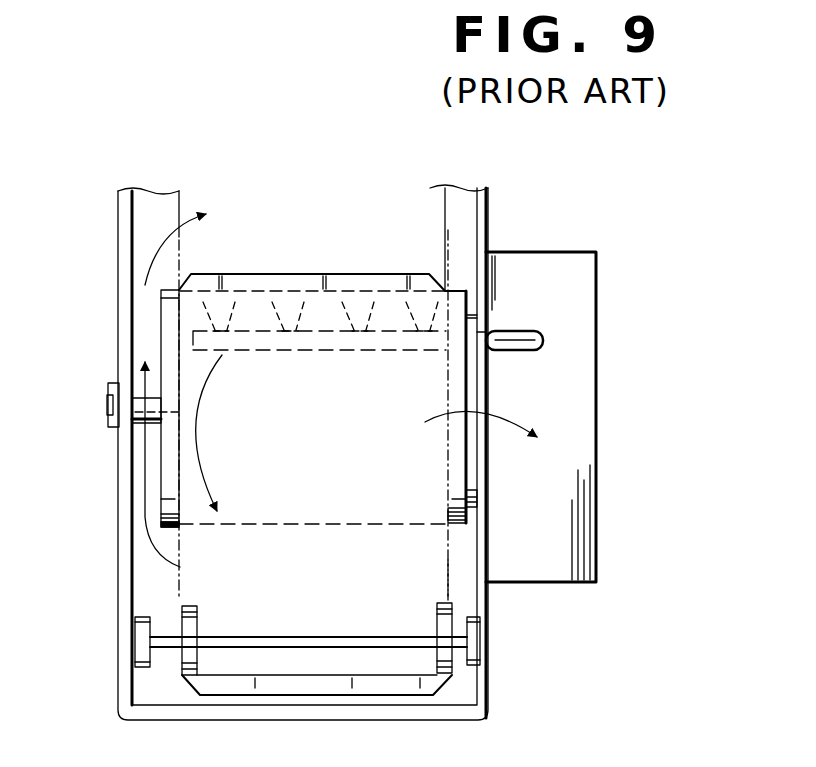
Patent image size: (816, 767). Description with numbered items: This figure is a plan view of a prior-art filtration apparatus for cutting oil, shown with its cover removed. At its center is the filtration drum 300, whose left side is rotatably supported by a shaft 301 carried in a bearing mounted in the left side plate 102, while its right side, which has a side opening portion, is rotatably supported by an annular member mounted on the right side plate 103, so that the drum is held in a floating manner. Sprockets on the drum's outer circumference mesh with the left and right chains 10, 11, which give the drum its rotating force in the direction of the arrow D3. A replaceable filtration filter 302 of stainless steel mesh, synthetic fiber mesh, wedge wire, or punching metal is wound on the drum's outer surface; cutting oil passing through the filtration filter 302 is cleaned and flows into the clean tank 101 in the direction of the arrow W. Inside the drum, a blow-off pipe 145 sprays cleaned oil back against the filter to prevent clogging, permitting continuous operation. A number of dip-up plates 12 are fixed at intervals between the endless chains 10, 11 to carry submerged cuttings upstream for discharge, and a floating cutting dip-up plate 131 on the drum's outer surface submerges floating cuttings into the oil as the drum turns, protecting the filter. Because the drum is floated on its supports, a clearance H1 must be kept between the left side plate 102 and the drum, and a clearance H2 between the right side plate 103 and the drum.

The left chain 10 is at (180, 581).
The right chain 11 is at (452, 567).
The dip-up plate 12 is at (327, 683).
The clean tank 101 is at (577, 307).
The left side plate 102 is at (142, 245).
The right side plate 103 is at (488, 205).
The floating cutting dip-up plate 131 is at (310, 272).
The blow-off pipe 145 is at (335, 340).
The filtration drum 300 is at (470, 480).
The shaft 301 is at (133, 412).
The filtration filter 302 is at (367, 530).
The clearance H1 is at (143, 325).
The clearance H2 is at (472, 515).
The arrow D3 is at (193, 455).
The arrow W is at (497, 412).